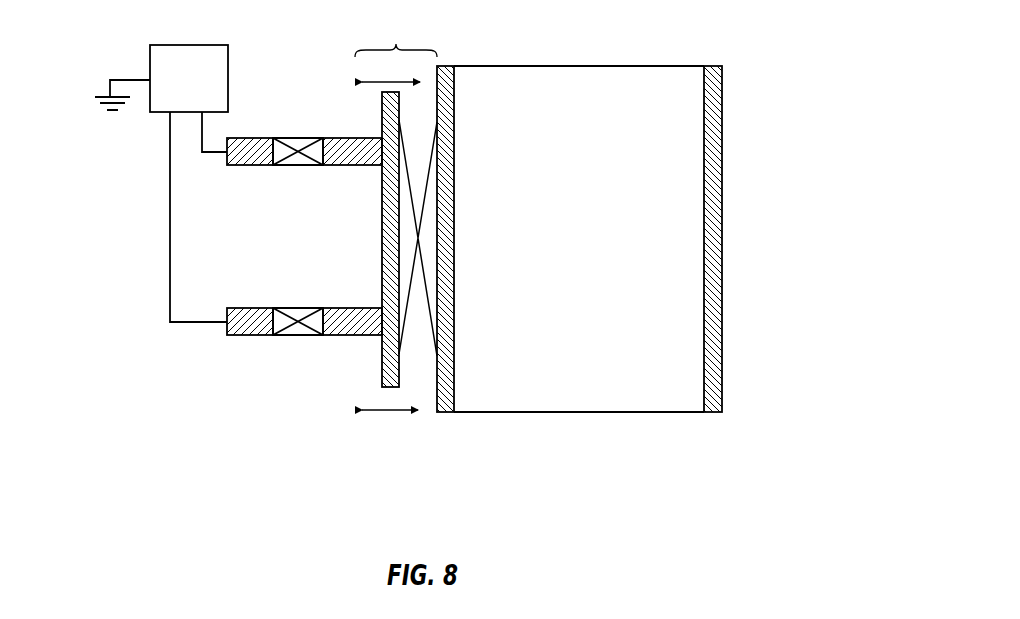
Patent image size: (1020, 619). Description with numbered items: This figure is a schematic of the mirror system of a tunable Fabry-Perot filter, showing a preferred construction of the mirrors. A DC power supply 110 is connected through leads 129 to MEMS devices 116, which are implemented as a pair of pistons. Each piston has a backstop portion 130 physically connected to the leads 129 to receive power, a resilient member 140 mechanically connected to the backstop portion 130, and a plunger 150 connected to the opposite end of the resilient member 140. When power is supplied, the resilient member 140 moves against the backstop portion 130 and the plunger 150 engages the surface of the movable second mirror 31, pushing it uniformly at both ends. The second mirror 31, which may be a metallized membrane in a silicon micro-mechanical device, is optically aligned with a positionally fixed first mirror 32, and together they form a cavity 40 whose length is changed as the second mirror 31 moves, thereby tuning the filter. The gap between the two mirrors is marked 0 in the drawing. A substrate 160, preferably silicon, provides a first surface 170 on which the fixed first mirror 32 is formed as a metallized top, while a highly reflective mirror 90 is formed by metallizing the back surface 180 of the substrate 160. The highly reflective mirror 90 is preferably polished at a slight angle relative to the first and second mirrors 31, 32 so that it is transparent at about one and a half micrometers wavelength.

The DC power supply 110 is at (190, 45).
The leads 129 is at (202, 137).
The MEMS devices 116 is at (283, 255).
The backstop portion 130 is at (260, 165).
The resilient member 140 is at (317, 165).
The plunger 150 is at (290, 391).
The second mirror 31 is at (382, 371).
The first mirror 32 is at (443, 412).
The gap distance 0 is at (396, 211).
The cavity 40 is at (428, 350).
The highly reflective mirror 90 is at (613, 258).
The first surface 170 is at (487, 258).
The back surface 180 is at (704, 108).
The substrate 160 is at (570, 412).